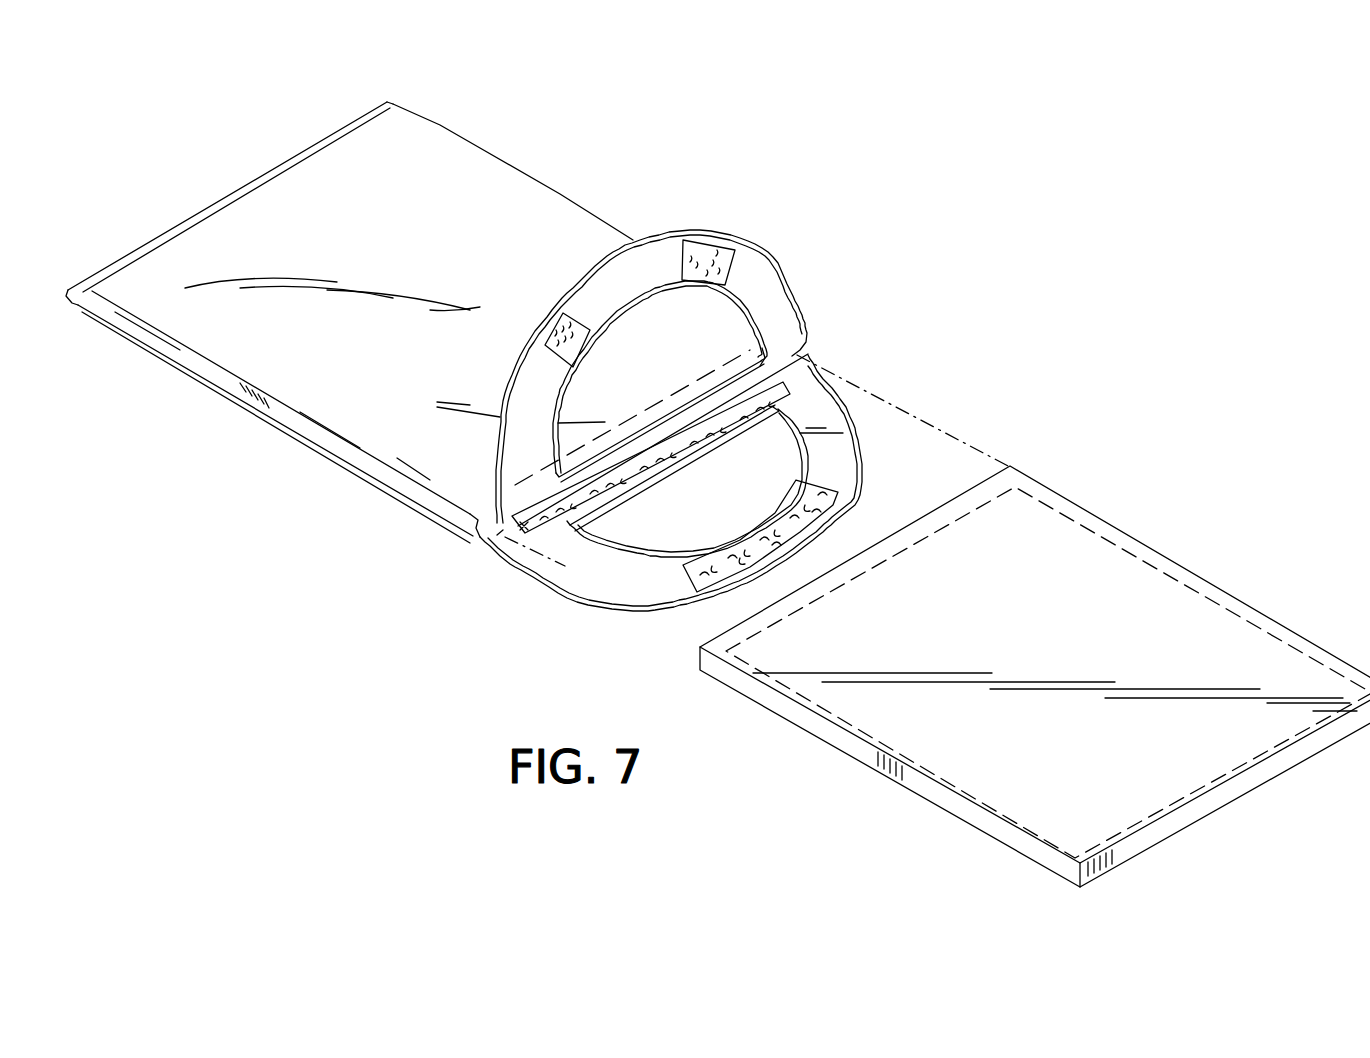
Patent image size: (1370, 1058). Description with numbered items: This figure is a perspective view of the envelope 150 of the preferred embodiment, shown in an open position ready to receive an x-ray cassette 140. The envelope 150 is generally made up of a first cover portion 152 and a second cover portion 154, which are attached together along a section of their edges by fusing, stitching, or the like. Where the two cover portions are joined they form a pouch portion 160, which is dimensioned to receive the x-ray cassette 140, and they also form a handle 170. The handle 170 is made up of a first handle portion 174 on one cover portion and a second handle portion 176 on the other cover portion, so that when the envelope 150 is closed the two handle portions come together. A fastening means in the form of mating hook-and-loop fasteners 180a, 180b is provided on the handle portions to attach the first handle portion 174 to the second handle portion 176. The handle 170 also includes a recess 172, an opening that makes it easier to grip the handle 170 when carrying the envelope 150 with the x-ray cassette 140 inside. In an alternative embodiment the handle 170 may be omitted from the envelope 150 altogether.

The x-ray cassette 140 is at (1091, 551).
The envelope 150 is at (617, 193).
The first cover portion 152 is at (532, 220).
The second cover portion 154 is at (343, 467).
The pouch portion 160 is at (496, 160).
The handle 170 is at (576, 603).
The recess 172 is at (637, 542).
The first handle portion 174 is at (767, 278).
The second handle portion 176 is at (662, 595).
The hook-and-loop fastener 180a is at (683, 253).
The hook-and-loop fastener 180b is at (777, 380).